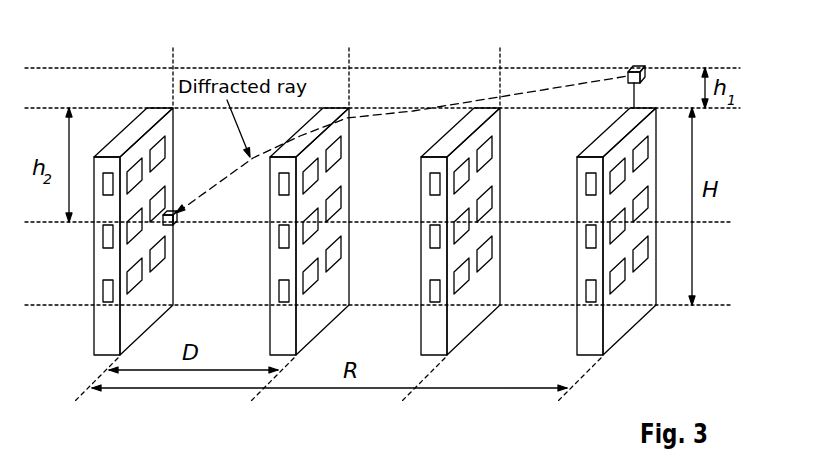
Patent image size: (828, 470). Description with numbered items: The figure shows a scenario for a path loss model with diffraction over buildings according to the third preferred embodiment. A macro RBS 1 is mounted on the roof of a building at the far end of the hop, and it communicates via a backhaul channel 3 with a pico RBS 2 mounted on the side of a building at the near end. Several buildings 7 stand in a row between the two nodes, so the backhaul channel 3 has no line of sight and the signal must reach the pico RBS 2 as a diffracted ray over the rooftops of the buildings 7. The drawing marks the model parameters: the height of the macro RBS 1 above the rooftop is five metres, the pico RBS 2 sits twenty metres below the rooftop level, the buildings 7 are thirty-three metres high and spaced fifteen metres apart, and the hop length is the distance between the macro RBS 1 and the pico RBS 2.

The buildings 7 is at (627, 127).
The macro RBS 1 is at (640, 67).
The pico RBS 2 is at (174, 226).
The backhaul channel 3 is at (392, 117).